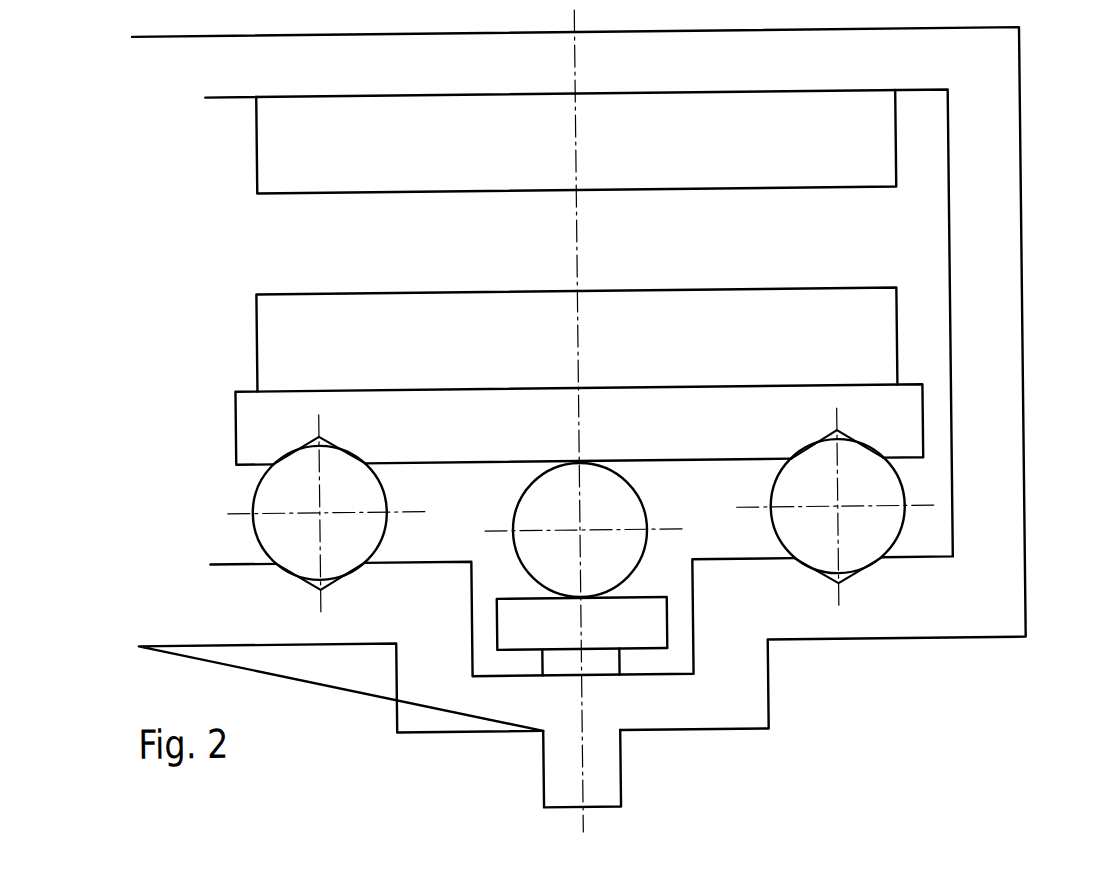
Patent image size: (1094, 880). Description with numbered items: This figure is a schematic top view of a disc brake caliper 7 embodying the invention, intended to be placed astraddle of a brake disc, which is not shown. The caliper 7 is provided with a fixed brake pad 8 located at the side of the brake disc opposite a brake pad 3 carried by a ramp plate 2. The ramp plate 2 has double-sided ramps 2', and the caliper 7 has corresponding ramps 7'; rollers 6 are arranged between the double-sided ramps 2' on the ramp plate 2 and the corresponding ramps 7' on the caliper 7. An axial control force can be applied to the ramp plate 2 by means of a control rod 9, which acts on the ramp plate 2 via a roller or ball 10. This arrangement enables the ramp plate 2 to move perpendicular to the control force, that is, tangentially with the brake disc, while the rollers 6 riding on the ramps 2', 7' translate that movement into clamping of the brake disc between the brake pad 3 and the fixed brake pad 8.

The ramp plate 2 is at (658, 431).
The double-sided ramps 2' is at (578, 429).
The brake pad 3 is at (868, 338).
The rollers 6 is at (355, 486).
The disc brake caliper 7 is at (608, 381).
The ramps 7' is at (581, 594).
The fixed brake pad 8 is at (872, 141).
The control rod 9 is at (590, 777).
The roller or ball 10 is at (533, 518).